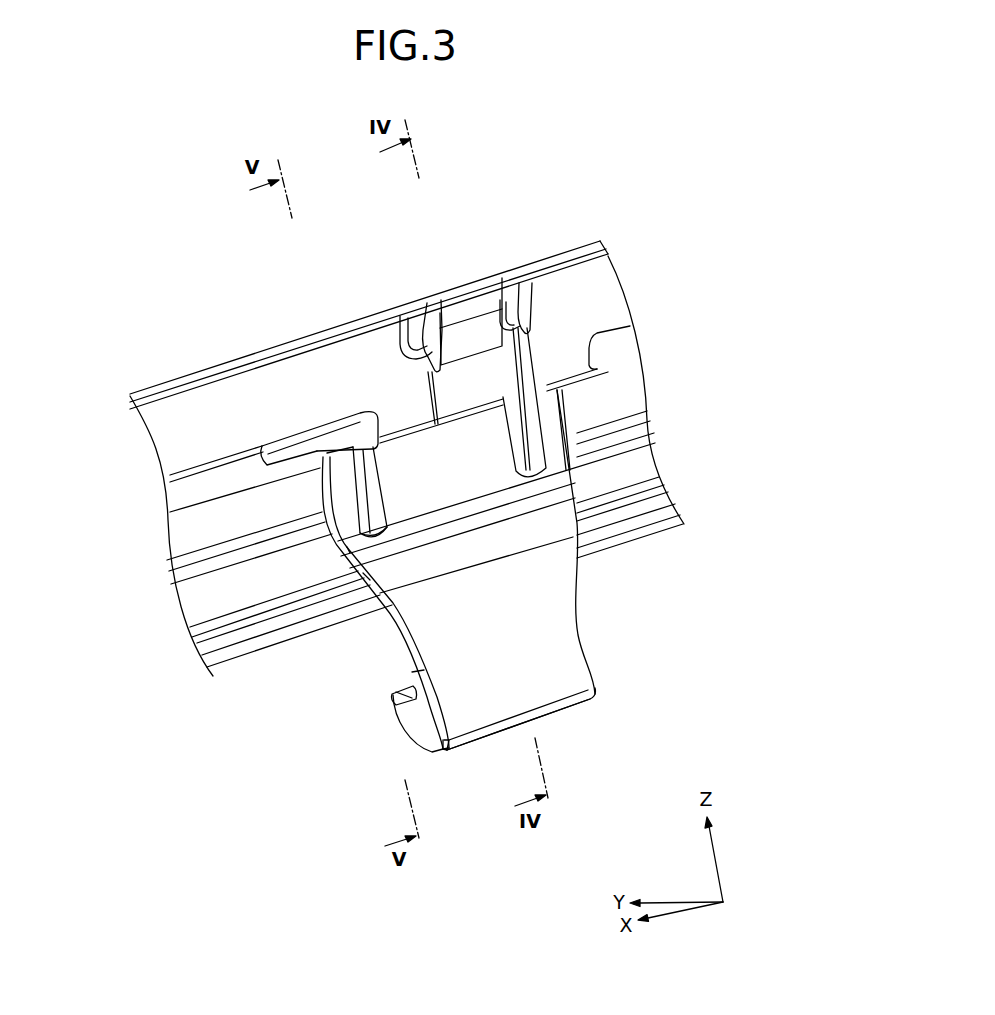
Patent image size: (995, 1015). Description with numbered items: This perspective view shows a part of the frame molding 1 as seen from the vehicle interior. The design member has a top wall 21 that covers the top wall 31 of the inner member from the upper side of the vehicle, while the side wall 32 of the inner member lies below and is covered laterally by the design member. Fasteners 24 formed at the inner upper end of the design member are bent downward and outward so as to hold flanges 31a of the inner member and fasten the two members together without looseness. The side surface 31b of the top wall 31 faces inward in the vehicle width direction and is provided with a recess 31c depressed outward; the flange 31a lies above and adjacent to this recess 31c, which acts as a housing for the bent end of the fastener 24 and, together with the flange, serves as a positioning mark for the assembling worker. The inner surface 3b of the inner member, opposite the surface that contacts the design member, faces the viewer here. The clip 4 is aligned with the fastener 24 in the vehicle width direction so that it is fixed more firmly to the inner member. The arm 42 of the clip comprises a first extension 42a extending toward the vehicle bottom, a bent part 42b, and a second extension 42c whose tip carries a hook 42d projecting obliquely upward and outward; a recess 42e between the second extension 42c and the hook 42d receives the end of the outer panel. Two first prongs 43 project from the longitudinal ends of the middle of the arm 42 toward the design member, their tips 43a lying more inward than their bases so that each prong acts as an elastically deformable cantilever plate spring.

The vehicle body structure 1 is at (184, 267).
The inner surface 3b is at (310, 492).
The clip 4 is at (445, 762).
The top wall 21 is at (537, 258).
The fastener 24 is at (470, 328).
The top wall 31 is at (606, 274).
The flange 31a is at (427, 322).
The side surface 31b is at (612, 307).
The recess 31c is at (488, 371).
The side wall 32 is at (622, 390).
The arm 42 is at (482, 748).
The first extension 42a is at (322, 500).
The bent part 42b is at (497, 543).
The second extension 42c is at (543, 660).
The hook 42d is at (400, 690).
The recess 42e is at (403, 683).
The first prong 43 is at (367, 503).
The tip 43a is at (335, 453).